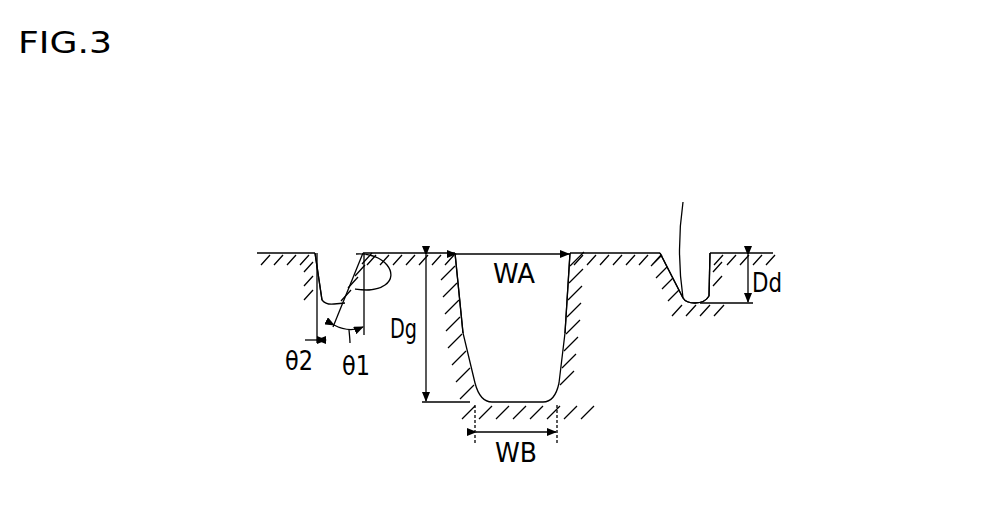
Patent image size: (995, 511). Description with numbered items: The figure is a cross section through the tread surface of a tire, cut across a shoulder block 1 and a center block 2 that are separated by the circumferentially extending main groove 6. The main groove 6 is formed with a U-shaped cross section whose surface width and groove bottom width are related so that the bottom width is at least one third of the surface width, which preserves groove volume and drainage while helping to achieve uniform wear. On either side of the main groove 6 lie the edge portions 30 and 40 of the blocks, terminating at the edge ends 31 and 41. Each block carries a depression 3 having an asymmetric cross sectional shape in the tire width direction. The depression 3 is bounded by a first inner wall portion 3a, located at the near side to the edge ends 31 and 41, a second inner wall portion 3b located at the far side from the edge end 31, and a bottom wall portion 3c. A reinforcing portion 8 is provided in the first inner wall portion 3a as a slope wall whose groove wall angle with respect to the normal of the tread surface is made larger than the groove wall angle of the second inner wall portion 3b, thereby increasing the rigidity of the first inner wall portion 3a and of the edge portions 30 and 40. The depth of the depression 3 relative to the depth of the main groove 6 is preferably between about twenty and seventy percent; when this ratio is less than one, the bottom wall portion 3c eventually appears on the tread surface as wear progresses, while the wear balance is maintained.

The shoulder block 1 is at (765, 253).
The center block 2 is at (268, 253).
The depression 3 is at (331, 236).
The first inner wall portion 3a is at (359, 253).
The second inner wall portion 3b is at (320, 264).
The bottom wall portion 3c is at (695, 305).
The main groove 6 is at (507, 204).
The reinforcing portion 8 is at (392, 253).
The edge portion 30 is at (353, 421).
The edge end 31 is at (454, 252).
The edge portion 40 is at (659, 388).
The edge end 41 is at (570, 252).